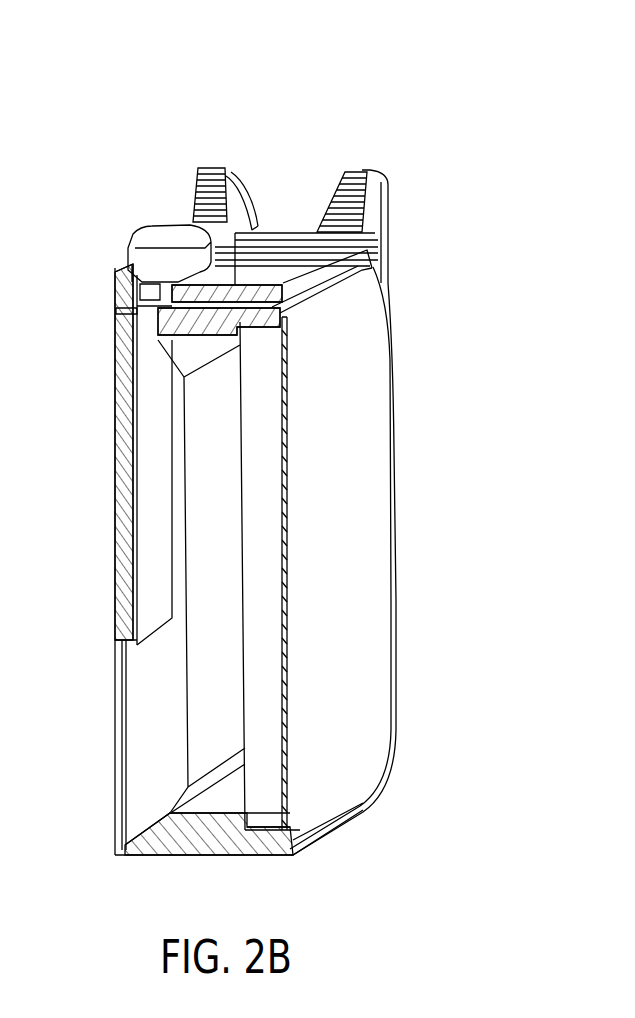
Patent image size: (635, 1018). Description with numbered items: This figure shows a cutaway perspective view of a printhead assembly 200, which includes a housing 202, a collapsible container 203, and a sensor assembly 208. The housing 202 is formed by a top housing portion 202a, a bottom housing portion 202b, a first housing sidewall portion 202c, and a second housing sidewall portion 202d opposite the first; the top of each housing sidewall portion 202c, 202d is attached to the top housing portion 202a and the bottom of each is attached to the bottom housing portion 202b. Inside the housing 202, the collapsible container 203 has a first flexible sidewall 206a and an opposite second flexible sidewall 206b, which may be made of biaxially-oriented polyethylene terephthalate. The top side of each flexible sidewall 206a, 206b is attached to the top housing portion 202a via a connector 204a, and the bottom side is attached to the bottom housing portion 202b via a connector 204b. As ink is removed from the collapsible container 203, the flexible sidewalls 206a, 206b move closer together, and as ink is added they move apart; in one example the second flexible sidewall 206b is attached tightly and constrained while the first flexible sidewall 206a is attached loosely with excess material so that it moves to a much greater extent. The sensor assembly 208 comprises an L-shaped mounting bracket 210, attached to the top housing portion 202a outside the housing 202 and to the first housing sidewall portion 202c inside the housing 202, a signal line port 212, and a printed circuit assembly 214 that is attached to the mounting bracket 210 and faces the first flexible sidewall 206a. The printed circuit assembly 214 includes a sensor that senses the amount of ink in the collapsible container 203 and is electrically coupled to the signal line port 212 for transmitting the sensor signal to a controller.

The printhead assembly 200 is at (228, 64).
The housing 202 is at (365, 617).
The top housing portion 202a is at (120, 318).
The bottom housing portion 202b is at (200, 843).
The first housing sidewall portion 202c is at (118, 480).
The second housing sidewall portion 202d is at (373, 498).
The collapsible container 203 is at (278, 768).
The connector 204a is at (167, 337).
The connector 204b is at (175, 818).
The first flexible sidewall 206a is at (190, 680).
The second flexible sidewall 206b is at (270, 728).
The sensor assembly 208 is at (318, 270).
The mounting bracket 210 is at (123, 440).
The signal line port 212 is at (140, 244).
The printed circuit assembly 214 is at (152, 573).